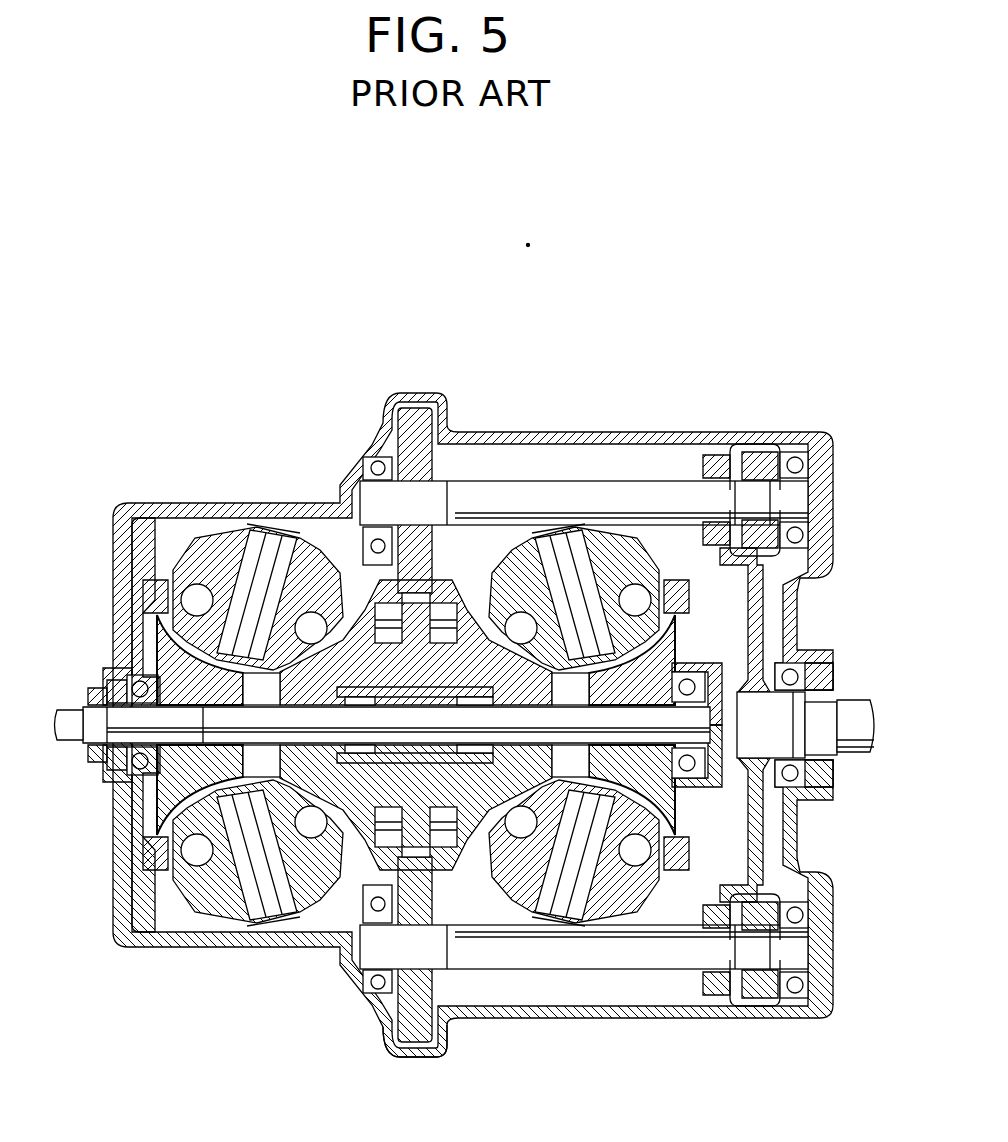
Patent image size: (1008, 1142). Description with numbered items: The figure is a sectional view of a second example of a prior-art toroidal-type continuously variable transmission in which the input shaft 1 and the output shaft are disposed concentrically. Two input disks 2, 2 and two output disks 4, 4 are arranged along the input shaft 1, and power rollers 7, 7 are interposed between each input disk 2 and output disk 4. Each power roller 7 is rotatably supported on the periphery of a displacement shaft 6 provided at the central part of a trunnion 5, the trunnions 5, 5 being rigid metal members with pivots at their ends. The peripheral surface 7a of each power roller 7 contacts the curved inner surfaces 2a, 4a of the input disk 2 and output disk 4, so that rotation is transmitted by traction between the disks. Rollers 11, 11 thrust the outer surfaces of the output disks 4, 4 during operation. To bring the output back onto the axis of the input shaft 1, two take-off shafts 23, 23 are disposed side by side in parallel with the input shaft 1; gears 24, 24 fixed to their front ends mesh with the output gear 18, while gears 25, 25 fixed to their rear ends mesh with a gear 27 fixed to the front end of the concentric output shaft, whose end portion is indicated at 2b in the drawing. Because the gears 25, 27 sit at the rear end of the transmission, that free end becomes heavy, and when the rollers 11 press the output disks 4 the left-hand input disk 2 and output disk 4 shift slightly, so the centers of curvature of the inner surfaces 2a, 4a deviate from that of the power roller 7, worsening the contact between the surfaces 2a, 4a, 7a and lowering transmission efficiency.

The input shaft 1 is at (85, 745).
The input disk 2 is at (145, 925).
The inner surface of input disk 2a is at (157, 632).
The output shaft hub 2b is at (848, 752).
The output disk 4 is at (470, 870).
The inner surface of output disk 4a is at (330, 595).
The trunnion 5 is at (210, 545).
The displacement shaft 6 is at (258, 565).
The power roller 7 is at (165, 570).
The peripheral surface of power roller 7a is at (160, 598).
The roller 11 is at (470, 590).
The output gear 18 is at (385, 1025).
The take-off shaft 23 is at (595, 490).
The gear 24 is at (412, 450).
The gear 25 is at (760, 452).
The gear 27 is at (760, 595).